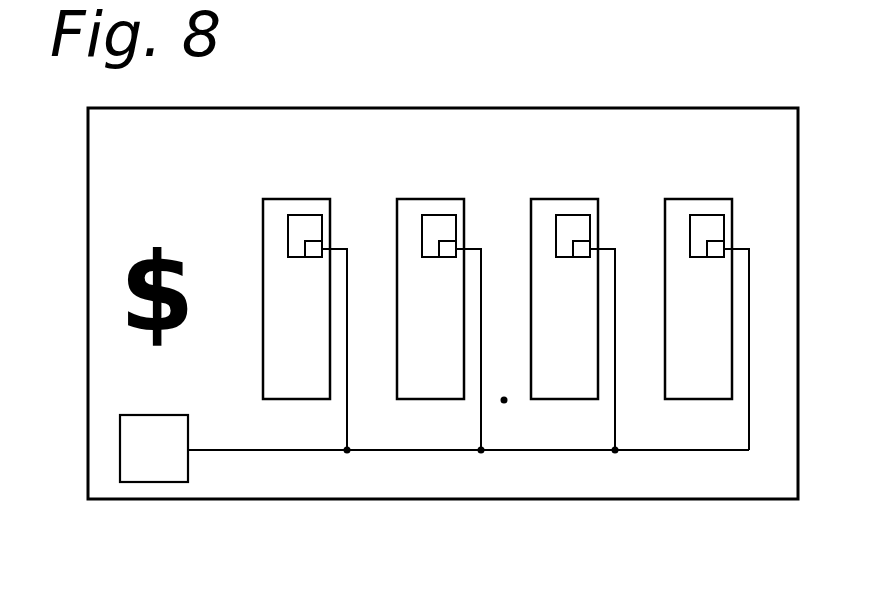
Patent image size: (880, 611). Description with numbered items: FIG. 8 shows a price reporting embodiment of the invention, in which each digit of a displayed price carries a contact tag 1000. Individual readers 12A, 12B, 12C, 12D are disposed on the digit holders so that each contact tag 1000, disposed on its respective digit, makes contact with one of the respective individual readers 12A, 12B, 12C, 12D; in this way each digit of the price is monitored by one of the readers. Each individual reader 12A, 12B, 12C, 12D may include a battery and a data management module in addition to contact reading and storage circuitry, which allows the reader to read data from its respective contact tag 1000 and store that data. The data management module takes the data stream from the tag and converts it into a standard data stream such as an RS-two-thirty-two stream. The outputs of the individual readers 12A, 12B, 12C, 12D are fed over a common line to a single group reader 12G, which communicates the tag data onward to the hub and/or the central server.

The contact tag 1000 is at (305, 213).
The individual reader 12A is at (312, 258).
The individual reader 12B is at (446, 258).
The individual reader 12C is at (580, 258).
The individual reader 12D is at (714, 258).
The group reader 12G is at (152, 482).